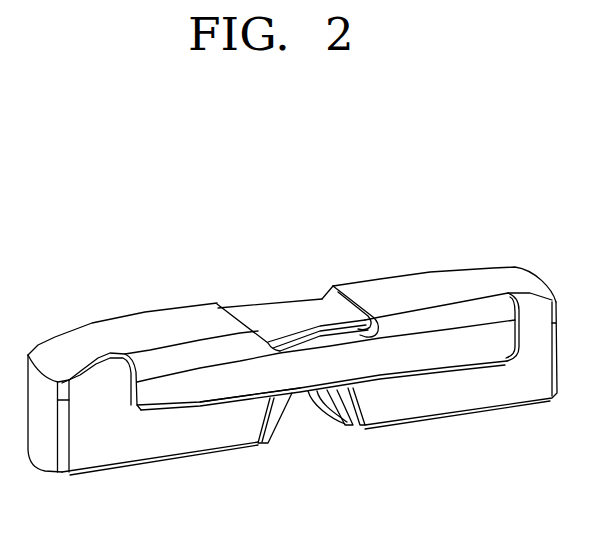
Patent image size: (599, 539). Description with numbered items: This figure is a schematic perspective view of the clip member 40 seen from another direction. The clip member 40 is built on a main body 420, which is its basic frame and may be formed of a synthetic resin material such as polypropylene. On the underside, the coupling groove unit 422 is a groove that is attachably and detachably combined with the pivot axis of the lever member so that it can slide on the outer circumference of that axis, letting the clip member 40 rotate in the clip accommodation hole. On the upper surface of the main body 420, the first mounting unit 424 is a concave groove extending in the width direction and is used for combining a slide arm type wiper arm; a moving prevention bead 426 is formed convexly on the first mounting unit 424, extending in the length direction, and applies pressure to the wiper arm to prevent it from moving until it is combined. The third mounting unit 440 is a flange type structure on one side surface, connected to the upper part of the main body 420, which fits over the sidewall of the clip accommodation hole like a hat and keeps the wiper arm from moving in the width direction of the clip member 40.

The clip member 40 is at (292, 328).
The main body 420 is at (75, 343).
The coupling groove unit 422 is at (301, 407).
The first mounting unit 424 is at (291, 318).
The moving prevention bead 426 is at (345, 330).
The third mounting unit 440 is at (220, 390).